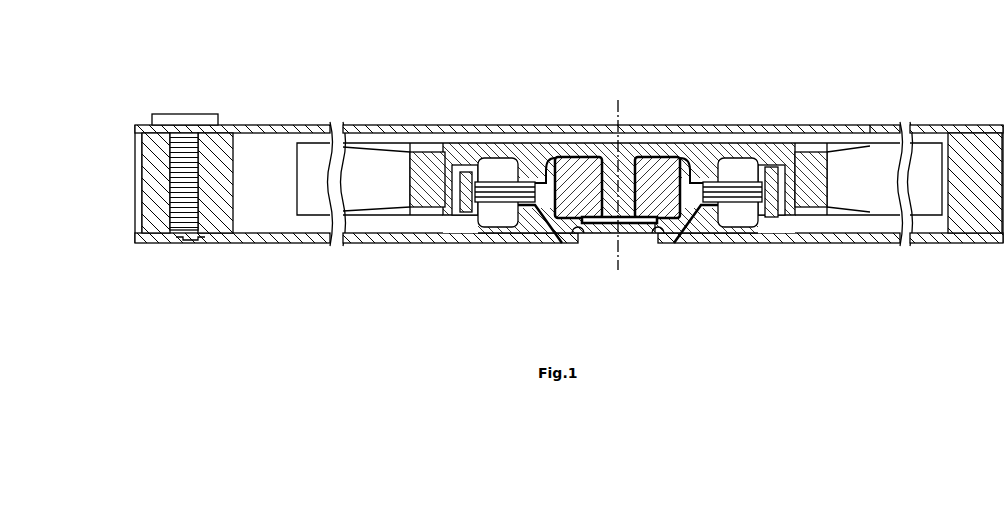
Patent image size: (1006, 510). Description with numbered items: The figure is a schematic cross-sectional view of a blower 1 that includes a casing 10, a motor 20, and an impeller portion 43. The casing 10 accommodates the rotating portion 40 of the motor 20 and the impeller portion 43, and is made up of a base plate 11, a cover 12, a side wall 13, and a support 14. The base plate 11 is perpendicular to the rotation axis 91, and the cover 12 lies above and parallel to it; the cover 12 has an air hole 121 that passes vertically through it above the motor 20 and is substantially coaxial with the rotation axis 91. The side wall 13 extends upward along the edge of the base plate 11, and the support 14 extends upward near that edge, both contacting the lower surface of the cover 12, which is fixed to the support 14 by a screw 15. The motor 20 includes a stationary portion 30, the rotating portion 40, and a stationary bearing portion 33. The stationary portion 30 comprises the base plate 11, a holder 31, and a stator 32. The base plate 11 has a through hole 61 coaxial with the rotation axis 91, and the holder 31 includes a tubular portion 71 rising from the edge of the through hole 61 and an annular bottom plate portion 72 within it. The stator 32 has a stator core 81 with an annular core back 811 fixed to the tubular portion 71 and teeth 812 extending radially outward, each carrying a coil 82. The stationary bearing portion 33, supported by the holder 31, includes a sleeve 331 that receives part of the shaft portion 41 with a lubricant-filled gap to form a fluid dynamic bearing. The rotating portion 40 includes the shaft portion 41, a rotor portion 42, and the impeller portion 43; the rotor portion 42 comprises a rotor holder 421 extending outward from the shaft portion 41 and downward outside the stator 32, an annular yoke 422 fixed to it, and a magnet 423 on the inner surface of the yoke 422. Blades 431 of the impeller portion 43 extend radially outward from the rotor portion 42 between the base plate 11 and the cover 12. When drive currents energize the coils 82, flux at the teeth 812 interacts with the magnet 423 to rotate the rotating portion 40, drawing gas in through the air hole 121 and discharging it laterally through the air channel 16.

The blower 1 is at (245, 90).
The casing 10 is at (931, 110).
The base plate 11 is at (305, 244).
The cover 12 is at (290, 126).
The air hole 121 is at (848, 127).
The side wall 13 is at (975, 205).
The support 14 is at (222, 171).
The screw 15 is at (187, 132).
The air channel 16 is at (253, 213).
The motor 20 is at (540, 80).
The stationary portion 30 is at (509, 160).
The holder 31 is at (530, 290).
The stator 32 is at (712, 311).
The stationary bearing portion 33 is at (636, 242).
The sleeve 331 is at (660, 224).
The rotating portion 40 is at (566, 160).
The shaft portion 41 is at (642, 156).
The rotor portion 42 is at (803, 88).
The rotor holder 421 is at (727, 158).
The yoke 422 is at (808, 158).
The magnet 423 is at (765, 165).
The impeller portion 43 is at (399, 141).
The blade 431 is at (374, 176).
The through hole 61 is at (598, 243).
The tubular portion 71 is at (538, 220).
The bottom plate portion 72 is at (570, 240).
The stator core 81 is at (692, 279).
The core back 811 is at (705, 218).
The teeth 812 is at (745, 216).
The coils 82 is at (755, 222).
The rotation axis 91 is at (616, 104).